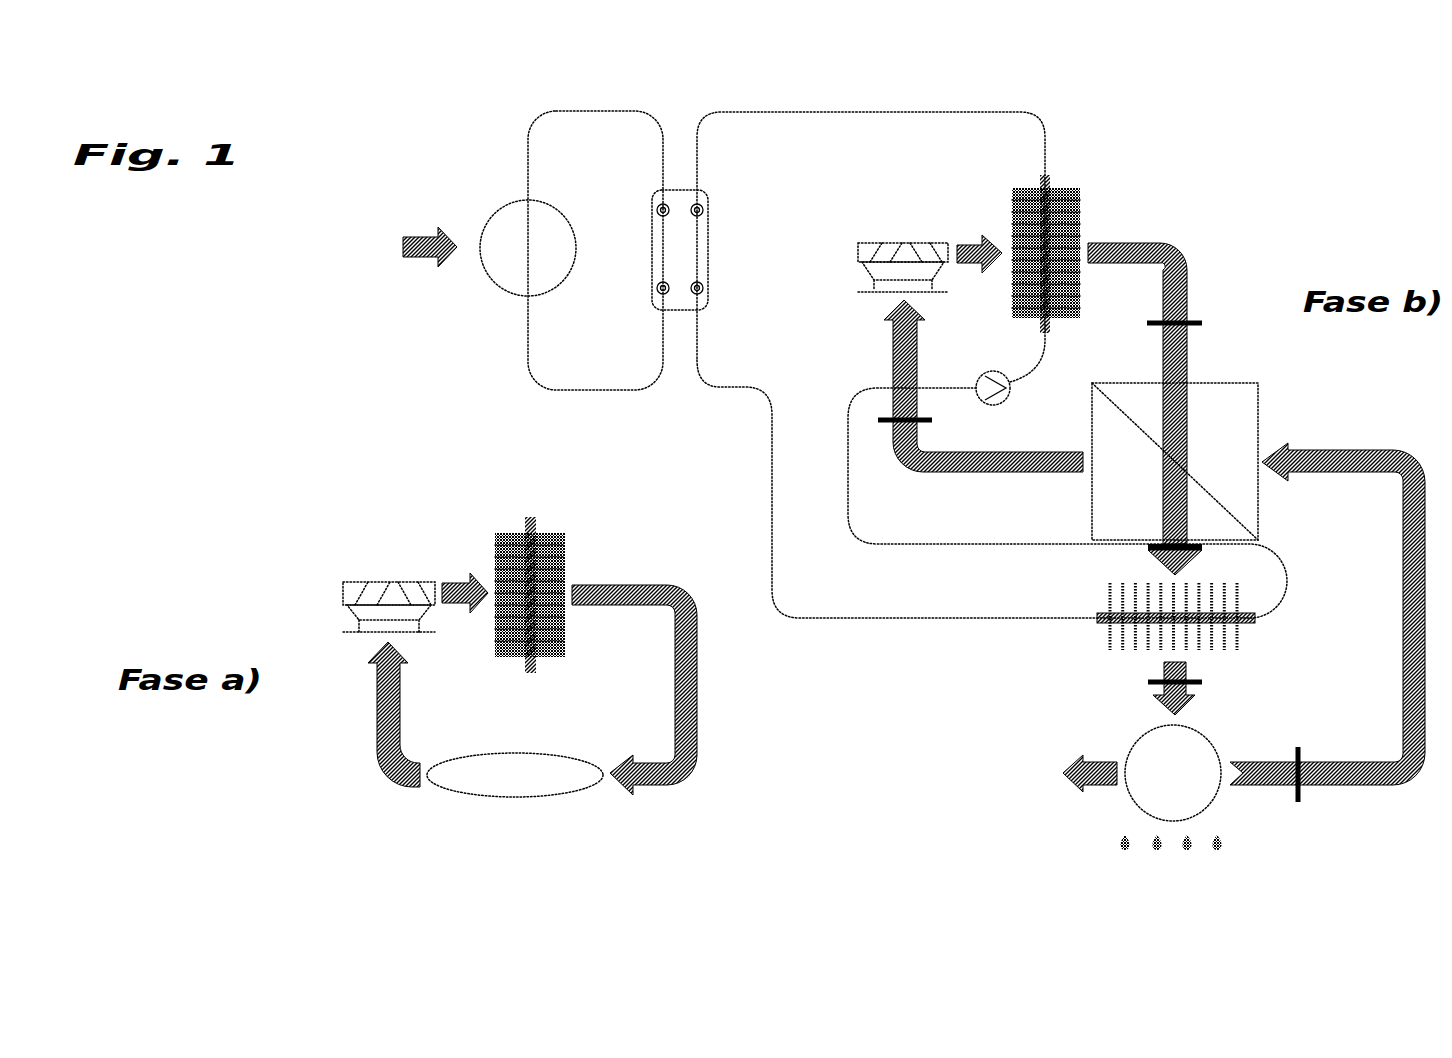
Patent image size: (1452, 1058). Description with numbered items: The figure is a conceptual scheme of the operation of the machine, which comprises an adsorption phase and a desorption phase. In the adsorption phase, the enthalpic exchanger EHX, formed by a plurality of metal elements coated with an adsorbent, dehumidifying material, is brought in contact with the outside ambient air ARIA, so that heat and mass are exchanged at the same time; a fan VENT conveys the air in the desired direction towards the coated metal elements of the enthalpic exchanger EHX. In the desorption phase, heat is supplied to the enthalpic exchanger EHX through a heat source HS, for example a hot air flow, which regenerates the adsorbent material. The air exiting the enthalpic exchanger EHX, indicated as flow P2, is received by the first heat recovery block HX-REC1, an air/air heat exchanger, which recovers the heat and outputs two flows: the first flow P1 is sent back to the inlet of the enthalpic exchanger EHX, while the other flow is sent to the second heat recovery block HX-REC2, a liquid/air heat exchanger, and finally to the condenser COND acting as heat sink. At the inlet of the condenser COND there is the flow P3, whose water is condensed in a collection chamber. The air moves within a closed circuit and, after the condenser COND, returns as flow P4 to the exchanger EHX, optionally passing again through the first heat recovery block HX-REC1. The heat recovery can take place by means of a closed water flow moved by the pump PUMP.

The heat source HS is at (528, 254).
The fan VENT is at (904, 240).
The enthalpic exchanger EHX is at (1042, 186).
The first flow P1 is at (895, 437).
The air exiting the enthalpic exchanger P2 is at (1158, 393).
The flow at the condenser inlet P3 is at (1194, 688).
The flow P4 is at (1318, 788).
The pump PUMP is at (986, 386).
The first heat recovery block HX-REC1 is at (1208, 447).
The second heat recovery block HX-REC2 is at (1100, 628).
The condenser COND is at (1160, 798).
The outside ambient air ARIA is at (522, 769).